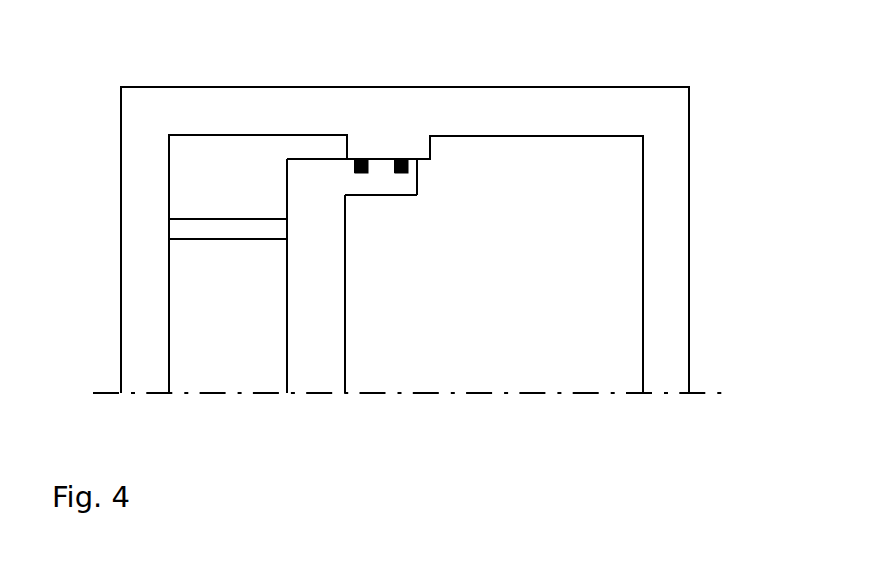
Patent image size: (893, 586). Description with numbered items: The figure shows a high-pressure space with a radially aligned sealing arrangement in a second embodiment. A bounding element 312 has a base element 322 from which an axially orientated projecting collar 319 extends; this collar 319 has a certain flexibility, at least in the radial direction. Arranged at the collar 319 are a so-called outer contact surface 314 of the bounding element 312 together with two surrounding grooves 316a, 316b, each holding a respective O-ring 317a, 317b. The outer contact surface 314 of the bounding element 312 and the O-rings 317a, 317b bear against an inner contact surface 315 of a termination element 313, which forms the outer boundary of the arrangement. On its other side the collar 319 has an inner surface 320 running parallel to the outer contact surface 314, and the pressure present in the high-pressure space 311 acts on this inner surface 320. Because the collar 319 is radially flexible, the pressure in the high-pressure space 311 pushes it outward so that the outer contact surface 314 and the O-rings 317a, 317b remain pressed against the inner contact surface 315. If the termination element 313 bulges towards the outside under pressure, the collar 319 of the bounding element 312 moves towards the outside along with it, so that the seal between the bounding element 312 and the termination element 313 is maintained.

The high-pressure space 311 is at (572, 364).
The bounding element 312 is at (333, 277).
The termination element 313 is at (677, 375).
The outer contact surface 314 is at (347, 160).
The inner contact surface 315 is at (405, 160).
The surrounding groove 316a is at (405, 162).
The surrounding groove 316b is at (363, 162).
The O-ring 317a is at (400, 162).
The O-ring 317b is at (357, 162).
The projecting collar 319 is at (408, 178).
The inner surface 320 is at (380, 195).
The base element 322 is at (313, 358).